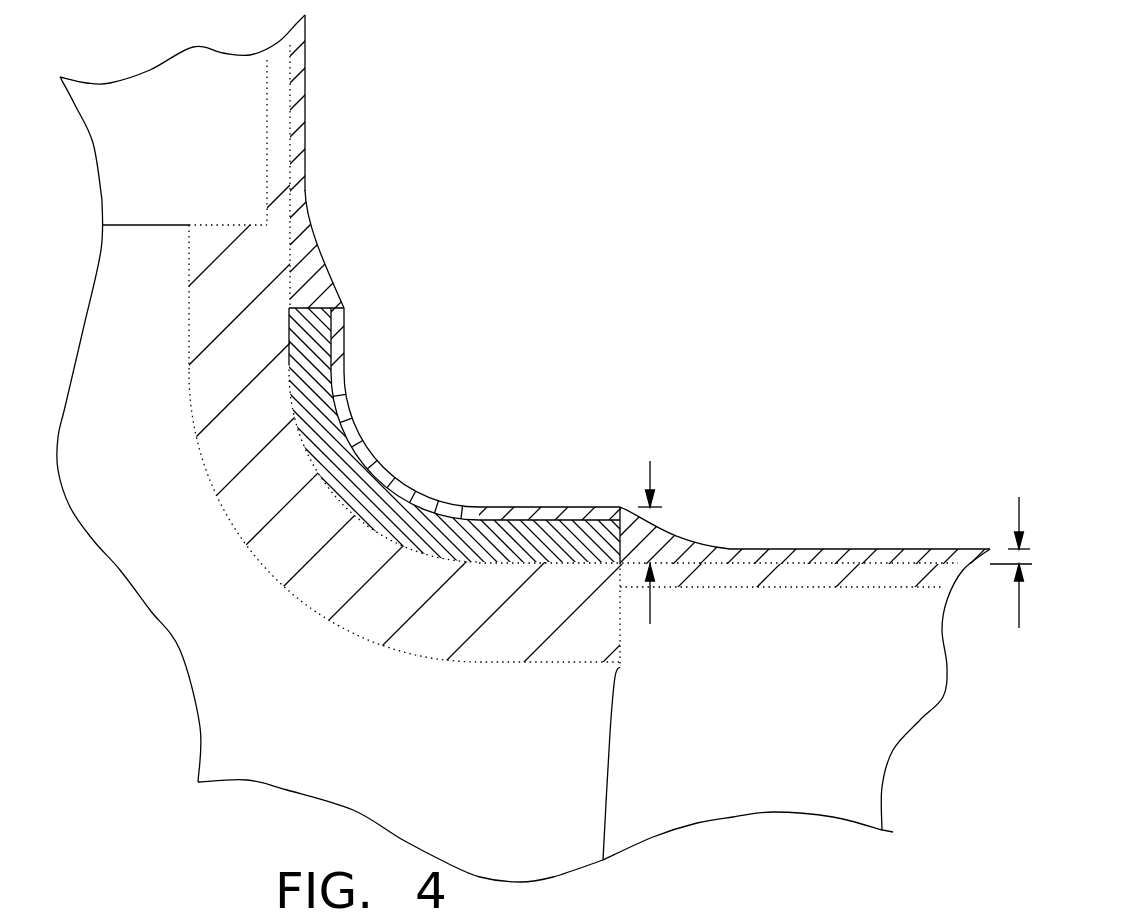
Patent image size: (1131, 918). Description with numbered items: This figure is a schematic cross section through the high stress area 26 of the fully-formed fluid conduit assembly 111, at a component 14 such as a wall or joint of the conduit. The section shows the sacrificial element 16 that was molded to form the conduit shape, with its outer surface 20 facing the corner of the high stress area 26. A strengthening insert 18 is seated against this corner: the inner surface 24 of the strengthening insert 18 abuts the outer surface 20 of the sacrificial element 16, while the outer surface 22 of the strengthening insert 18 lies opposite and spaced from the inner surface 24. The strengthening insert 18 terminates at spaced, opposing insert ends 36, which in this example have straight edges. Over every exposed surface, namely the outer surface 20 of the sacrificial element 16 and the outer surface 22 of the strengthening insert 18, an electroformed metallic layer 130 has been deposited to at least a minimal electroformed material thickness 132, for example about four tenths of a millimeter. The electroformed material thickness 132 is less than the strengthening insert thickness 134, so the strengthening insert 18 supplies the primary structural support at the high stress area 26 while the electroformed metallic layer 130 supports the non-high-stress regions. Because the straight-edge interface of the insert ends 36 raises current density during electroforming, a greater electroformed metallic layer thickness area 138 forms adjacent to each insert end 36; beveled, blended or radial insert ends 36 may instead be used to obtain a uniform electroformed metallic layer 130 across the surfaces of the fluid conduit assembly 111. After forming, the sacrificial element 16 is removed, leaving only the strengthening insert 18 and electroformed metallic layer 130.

The fluid conduit assembly 111 is at (940, 179).
The component 14 is at (403, 240).
The electroformed metallic layer 130 is at (297, 147).
The greater electroformed metallic layer thickness area 138 is at (332, 240).
The outer surface of sacrificial element 20 is at (813, 553).
The strengthening insert 18 is at (332, 428).
The outer surface of strengthening insert 22 is at (519, 512).
The insert ends 36 is at (339, 296).
The high stress area 26 is at (500, 392).
The sacrificial element 16 is at (618, 634).
The inner surface of strengthening insert 24 is at (565, 575).
The electroformed material thickness 132 is at (1019, 610).
The strengthening insert thickness 134 is at (650, 609).